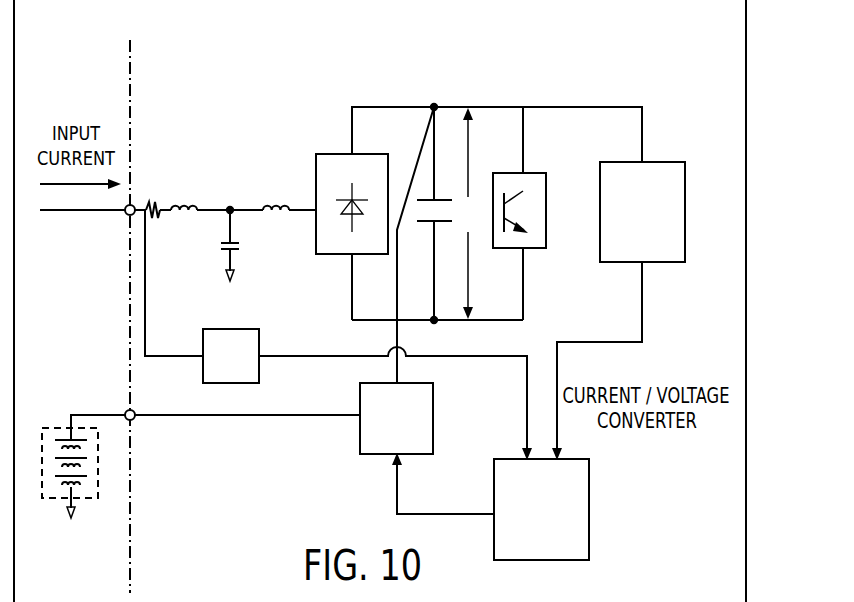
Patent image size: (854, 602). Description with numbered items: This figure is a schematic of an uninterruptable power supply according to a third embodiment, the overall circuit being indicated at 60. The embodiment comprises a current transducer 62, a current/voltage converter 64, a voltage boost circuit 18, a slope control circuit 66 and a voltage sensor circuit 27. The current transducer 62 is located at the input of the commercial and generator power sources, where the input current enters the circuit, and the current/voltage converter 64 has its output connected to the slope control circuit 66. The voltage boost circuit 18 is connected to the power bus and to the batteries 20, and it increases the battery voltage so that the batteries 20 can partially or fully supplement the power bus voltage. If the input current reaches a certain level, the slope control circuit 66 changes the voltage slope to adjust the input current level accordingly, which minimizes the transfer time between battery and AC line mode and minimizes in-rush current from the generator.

The rectifier and capacitor circuit 60 is at (585, 72).
The voltage sensor circuit 27 is at (660, 162).
The current transducer 62 is at (152, 196).
The current/voltage converter 64 is at (248, 329).
The batteries 20 is at (52, 426).
The voltage boost circuit 18 is at (383, 454).
The slope control circuit 66 is at (589, 514).